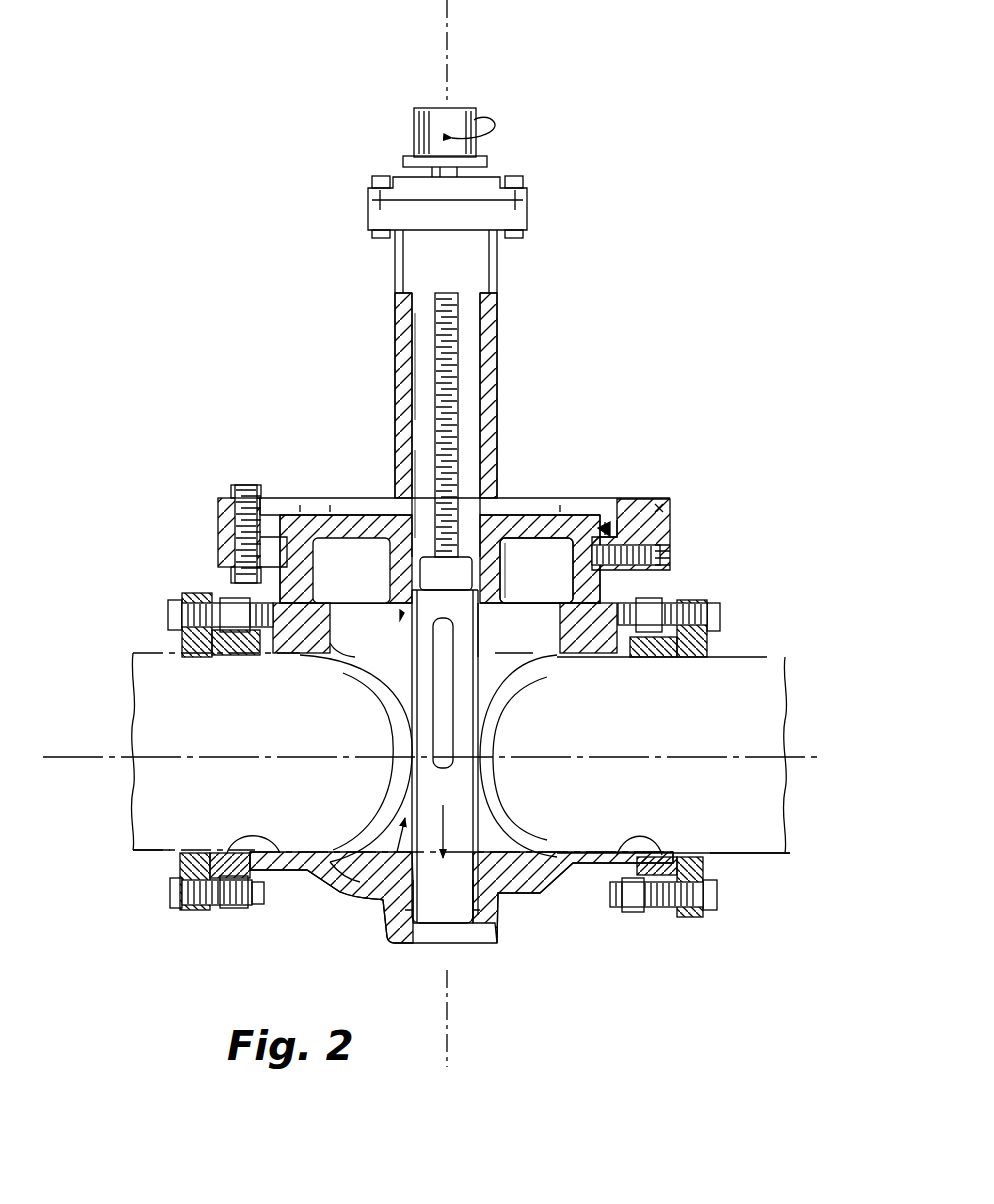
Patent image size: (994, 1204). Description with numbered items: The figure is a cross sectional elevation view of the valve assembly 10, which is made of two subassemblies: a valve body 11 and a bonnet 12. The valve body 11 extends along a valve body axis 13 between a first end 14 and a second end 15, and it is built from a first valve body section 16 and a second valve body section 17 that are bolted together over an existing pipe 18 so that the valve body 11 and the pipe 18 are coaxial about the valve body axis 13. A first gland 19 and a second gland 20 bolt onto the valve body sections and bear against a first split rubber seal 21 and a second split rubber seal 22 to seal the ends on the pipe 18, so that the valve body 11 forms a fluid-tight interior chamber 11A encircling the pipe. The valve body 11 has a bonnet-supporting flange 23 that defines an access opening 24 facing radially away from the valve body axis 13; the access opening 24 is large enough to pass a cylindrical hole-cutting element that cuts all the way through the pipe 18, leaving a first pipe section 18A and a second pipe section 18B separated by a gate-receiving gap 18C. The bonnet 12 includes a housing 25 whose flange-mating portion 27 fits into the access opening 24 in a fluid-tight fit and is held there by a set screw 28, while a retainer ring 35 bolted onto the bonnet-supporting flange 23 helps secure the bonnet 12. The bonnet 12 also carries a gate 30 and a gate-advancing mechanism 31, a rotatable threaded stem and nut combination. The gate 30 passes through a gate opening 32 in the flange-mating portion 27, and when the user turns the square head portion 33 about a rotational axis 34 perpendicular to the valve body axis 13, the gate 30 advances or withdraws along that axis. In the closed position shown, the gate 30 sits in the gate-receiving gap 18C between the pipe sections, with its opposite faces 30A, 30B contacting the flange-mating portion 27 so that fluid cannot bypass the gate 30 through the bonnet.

The valve assembly 10 is at (98, 88).
The valve body 11 is at (210, 545).
The interior chamber 11A is at (539, 630).
The bonnet 12 is at (391, 166).
The valve body axis 13 is at (52, 757).
The first end 14 is at (236, 908).
The second end 15 is at (650, 920).
The first valve body section 16 is at (663, 615).
The second valve body section 17 is at (466, 945).
The pipe 18 is at (128, 652).
The first pipe section 18A is at (133, 852).
The second pipe section 18B is at (757, 857).
The gate-receiving gap 18C is at (352, 880).
The first gland 19 is at (192, 910).
The second gland 20 is at (690, 918).
The first split rubber seal 21 is at (270, 870).
The second split rubber seal 22 is at (610, 875).
The bonnet-supporting flange 23 is at (672, 543).
The access opening 24 is at (604, 522).
The housing 25 is at (498, 302).
The flange-mating portion 27 is at (580, 578).
The set screw 28 is at (670, 555).
The gate 30 is at (445, 605).
The first face of the gate 30A is at (387, 908).
The second face of the gate 30B is at (487, 870).
The gate-advancing mechanism 31 is at (440, 415).
The gate opening 32 is at (400, 618).
The square head portion 33 is at (466, 108).
The rotational axis 34 is at (448, 22).
The retainer ring 35 is at (660, 508).